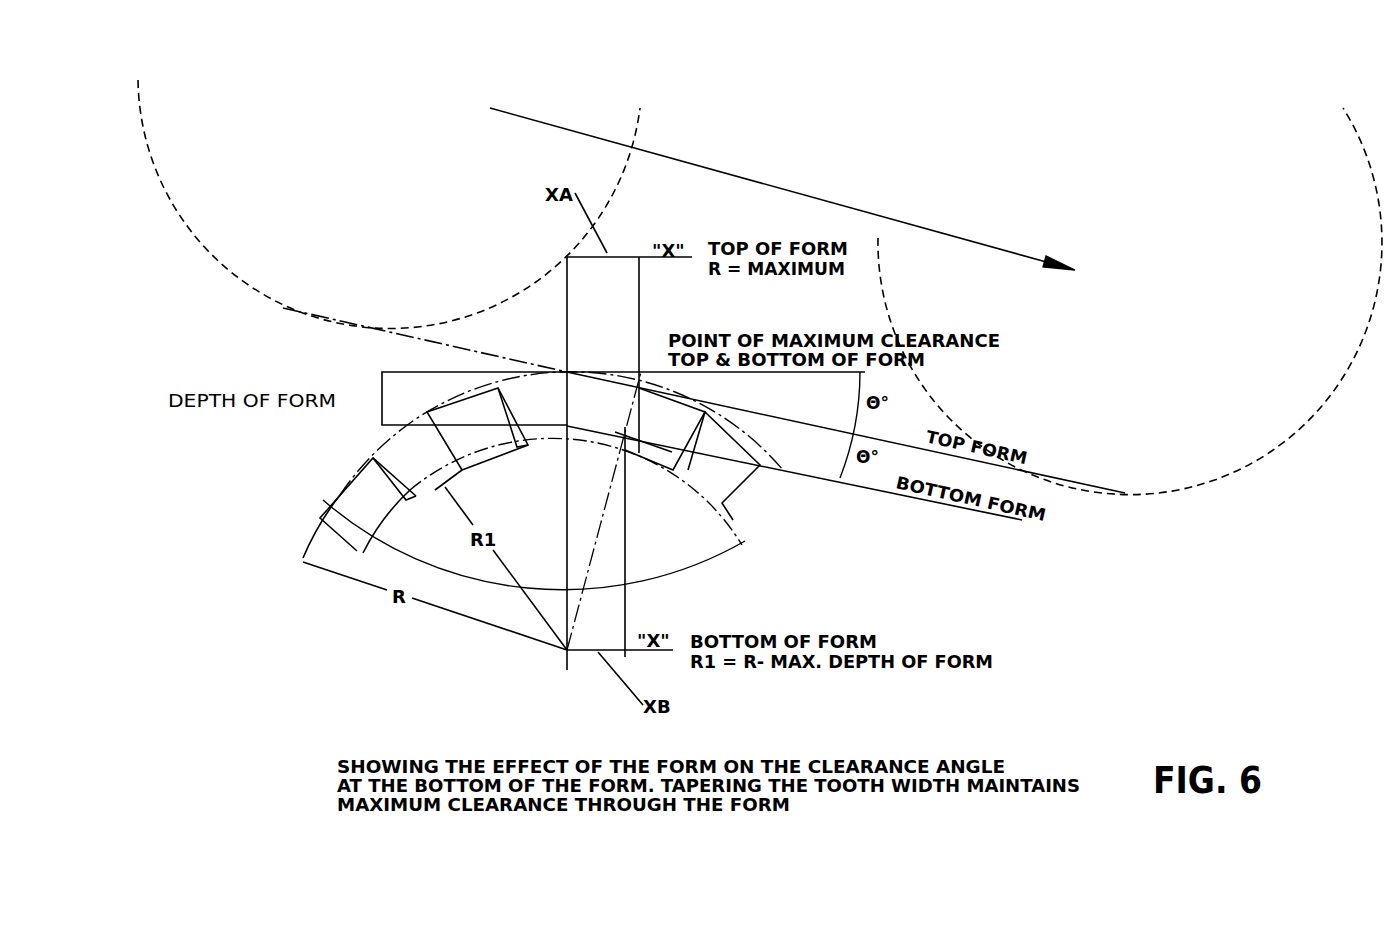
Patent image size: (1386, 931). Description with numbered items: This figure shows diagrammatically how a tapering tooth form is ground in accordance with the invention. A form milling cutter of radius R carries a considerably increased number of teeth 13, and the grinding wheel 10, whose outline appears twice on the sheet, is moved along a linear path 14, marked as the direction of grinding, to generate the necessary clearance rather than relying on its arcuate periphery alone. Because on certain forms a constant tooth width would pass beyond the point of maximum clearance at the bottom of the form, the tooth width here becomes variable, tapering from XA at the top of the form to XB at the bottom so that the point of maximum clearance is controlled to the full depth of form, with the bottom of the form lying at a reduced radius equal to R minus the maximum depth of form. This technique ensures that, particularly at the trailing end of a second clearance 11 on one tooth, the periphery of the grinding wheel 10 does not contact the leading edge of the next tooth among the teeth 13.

The grinding wheel 10 is at (283, 302).
The second clearance 11 is at (607, 372).
The teeth 13 is at (372, 498).
The linear path 14 is at (1017, 252).